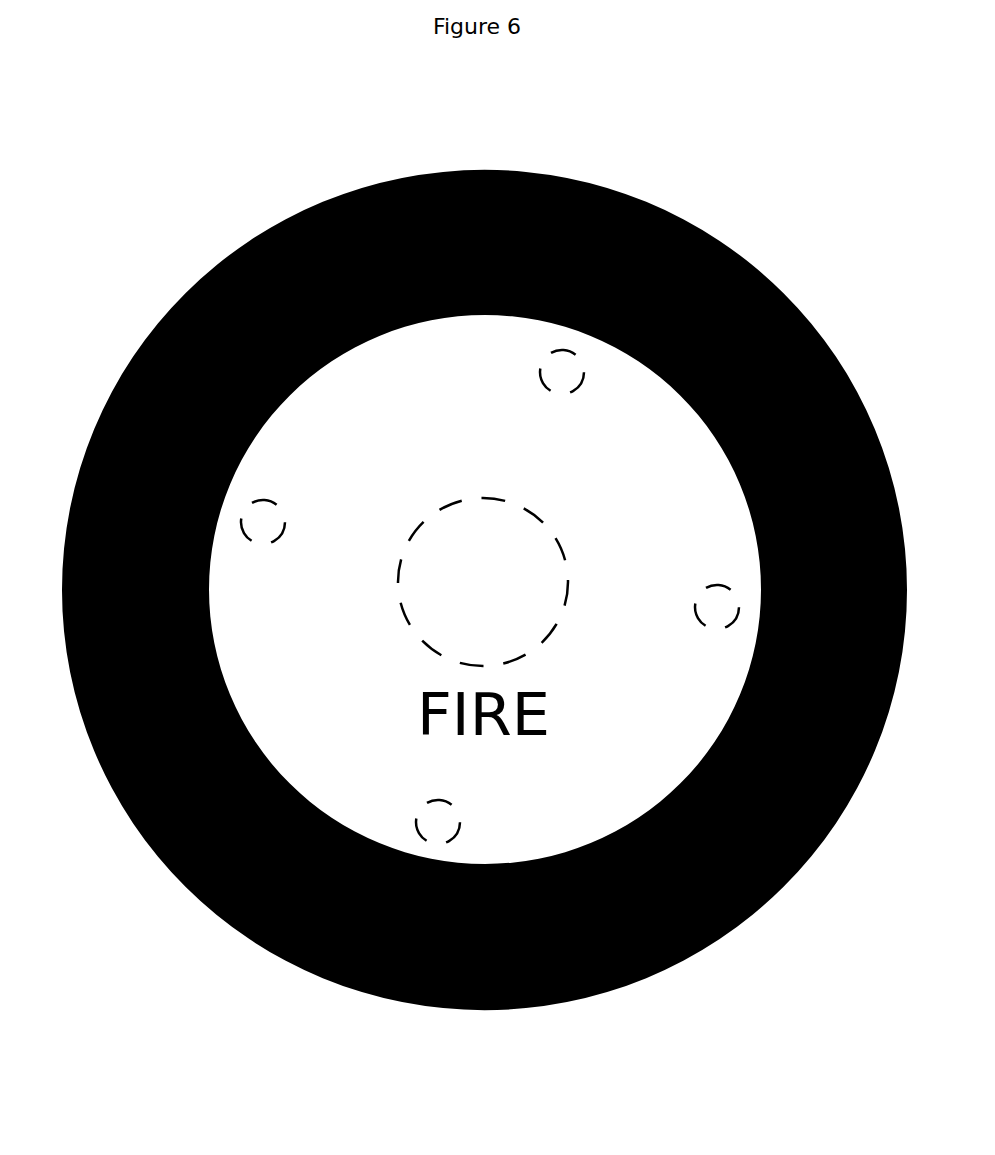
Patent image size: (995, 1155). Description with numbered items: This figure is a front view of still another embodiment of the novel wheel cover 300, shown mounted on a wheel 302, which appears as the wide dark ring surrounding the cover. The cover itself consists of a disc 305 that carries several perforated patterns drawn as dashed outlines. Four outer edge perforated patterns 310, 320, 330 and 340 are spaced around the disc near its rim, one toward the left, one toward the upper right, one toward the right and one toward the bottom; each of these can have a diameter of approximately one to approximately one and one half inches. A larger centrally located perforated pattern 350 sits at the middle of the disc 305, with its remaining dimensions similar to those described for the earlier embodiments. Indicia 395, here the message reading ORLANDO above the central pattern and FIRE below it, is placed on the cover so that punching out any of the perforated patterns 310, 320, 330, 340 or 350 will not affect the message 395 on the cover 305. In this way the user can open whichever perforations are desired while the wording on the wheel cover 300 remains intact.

The wheel cover 300 is at (477, 590).
The wheel 302 is at (477, 590).
The disc 305 is at (165, 867).
The outer edge perforated pattern 310 is at (283, 505).
The outer edge perforated pattern 320 is at (585, 378).
The outer edge perforated pattern 330 is at (715, 585).
The outer edge perforated pattern 340 is at (462, 820).
The centrally located perforated pattern 350 is at (548, 527).
The indicia 395 is at (370, 457).